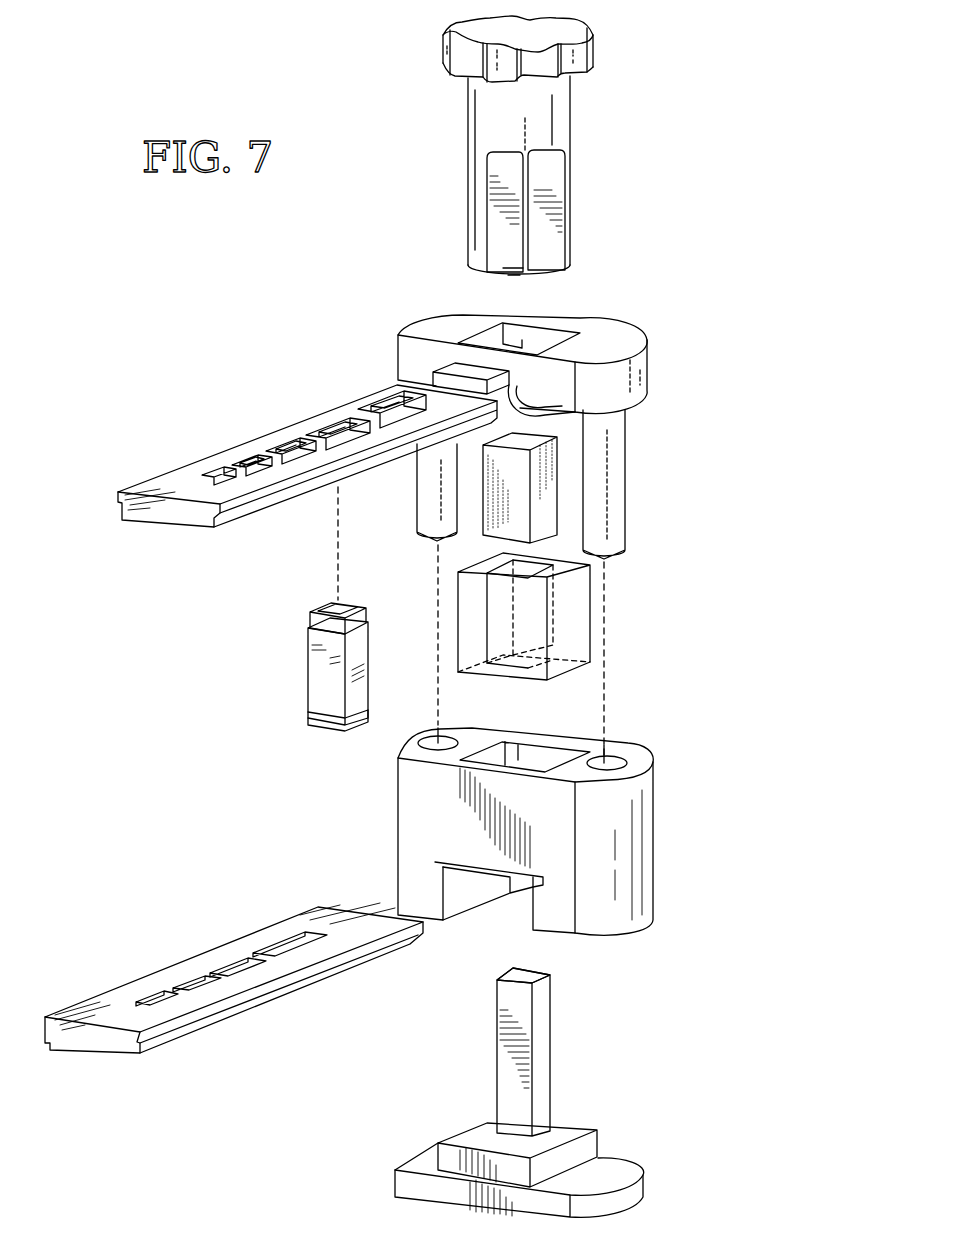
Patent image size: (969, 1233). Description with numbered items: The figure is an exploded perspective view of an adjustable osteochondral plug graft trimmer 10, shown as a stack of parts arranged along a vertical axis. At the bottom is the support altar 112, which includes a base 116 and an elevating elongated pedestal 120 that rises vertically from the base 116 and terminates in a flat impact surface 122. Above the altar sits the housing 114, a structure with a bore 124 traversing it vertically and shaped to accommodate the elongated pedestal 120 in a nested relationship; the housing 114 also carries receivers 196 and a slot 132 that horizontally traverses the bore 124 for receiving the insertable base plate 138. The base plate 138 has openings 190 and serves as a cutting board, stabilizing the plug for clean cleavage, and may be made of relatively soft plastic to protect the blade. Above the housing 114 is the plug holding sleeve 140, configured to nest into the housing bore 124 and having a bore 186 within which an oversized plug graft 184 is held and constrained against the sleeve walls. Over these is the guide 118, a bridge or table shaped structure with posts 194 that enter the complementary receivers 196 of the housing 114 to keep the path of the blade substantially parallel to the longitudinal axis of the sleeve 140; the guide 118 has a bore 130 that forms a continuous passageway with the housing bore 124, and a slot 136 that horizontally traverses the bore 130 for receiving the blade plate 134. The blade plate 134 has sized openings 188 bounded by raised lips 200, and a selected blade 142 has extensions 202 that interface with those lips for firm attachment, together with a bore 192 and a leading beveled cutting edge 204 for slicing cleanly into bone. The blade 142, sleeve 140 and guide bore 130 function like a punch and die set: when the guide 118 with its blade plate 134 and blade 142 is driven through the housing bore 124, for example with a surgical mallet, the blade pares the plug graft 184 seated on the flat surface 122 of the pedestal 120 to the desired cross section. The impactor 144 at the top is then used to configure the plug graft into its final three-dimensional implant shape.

The fiber optic connector assembly 10 is at (692, 198).
The impactor 144 is at (584, 116).
The guide 118 is at (563, 345).
The bore 130 is at (555, 330).
The slot 136 is at (598, 418).
The posts 194 is at (425, 507).
The plug graft 184 is at (540, 480).
The bore 186 is at (543, 569).
The plug holding sleeve 140 is at (579, 616).
The blade 142 is at (296, 625).
The extensions 202 is at (310, 626).
The leading beveled cutting edge 204 is at (316, 724).
The bore 192 is at (328, 606).
The blade plate 134 is at (301, 418).
The openings 188 is at (215, 468).
The raised lips 200 is at (248, 458).
The housing 114 is at (542, 826).
The bore 124 is at (550, 752).
The receivers 196 is at (426, 742).
The slot 132 is at (540, 880).
The base plate 138 is at (222, 961).
The opening 190 is at (220, 937).
The support altar 112 is at (535, 1083).
The base 116 is at (598, 1138).
The elevating elongated pedestal 120 is at (553, 1040).
The flat impact surface 122 is at (528, 973).